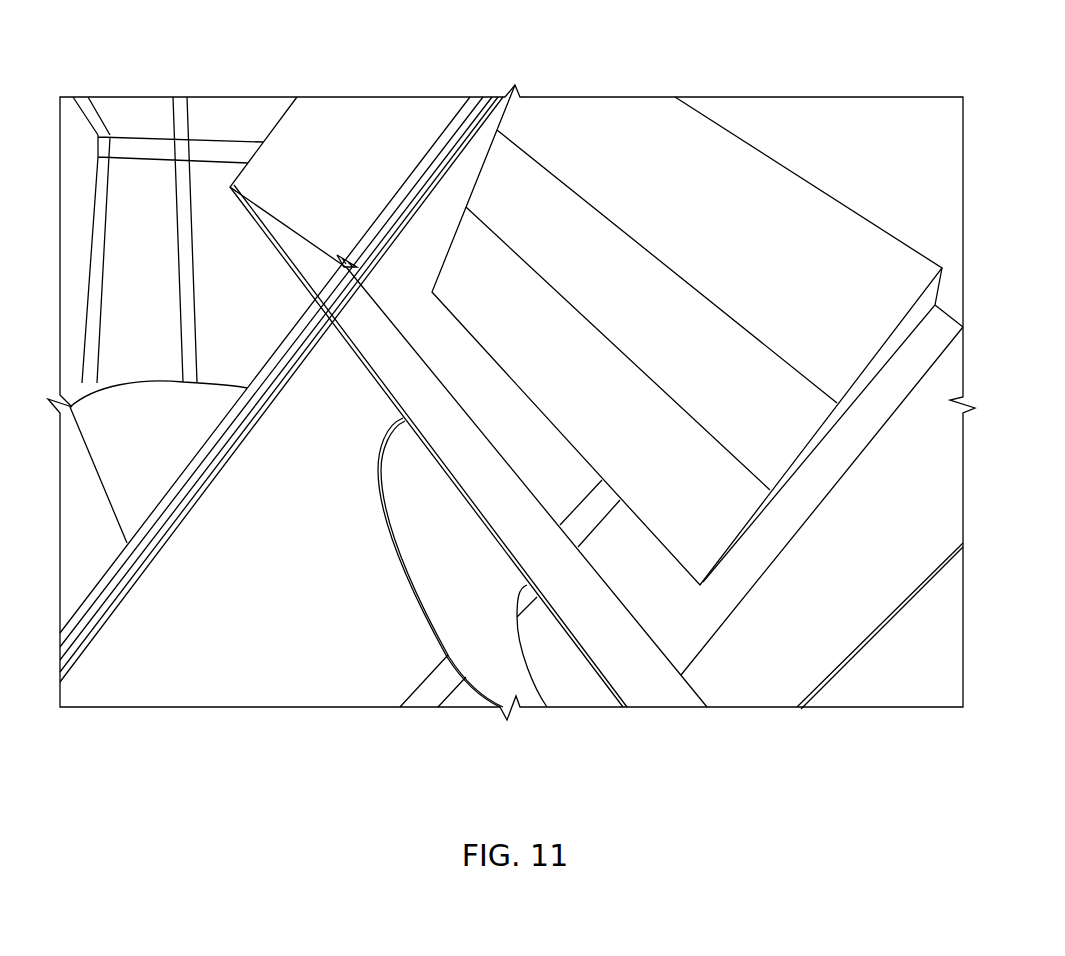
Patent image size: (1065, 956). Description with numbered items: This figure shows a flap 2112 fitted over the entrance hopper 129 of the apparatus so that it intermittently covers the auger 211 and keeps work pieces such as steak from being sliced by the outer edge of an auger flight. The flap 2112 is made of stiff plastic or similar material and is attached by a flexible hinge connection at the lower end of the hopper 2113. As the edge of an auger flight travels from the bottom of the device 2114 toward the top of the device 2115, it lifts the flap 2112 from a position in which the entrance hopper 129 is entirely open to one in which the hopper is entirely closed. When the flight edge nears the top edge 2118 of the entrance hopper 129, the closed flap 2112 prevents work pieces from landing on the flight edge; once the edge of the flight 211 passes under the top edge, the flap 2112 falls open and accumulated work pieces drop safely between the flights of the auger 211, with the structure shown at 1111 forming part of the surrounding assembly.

The entrance hopper 129 is at (312, 130).
The top edge of the entrance hopper 2118 is at (421, 290).
The flap 2112 is at (563, 230).
The lower end of the hopper 2113 is at (690, 105).
The bottom of the device 2114 is at (913, 223).
The top of the device 2115 is at (267, 642).
The auger 211 is at (470, 652).
The base 1111 is at (766, 692).